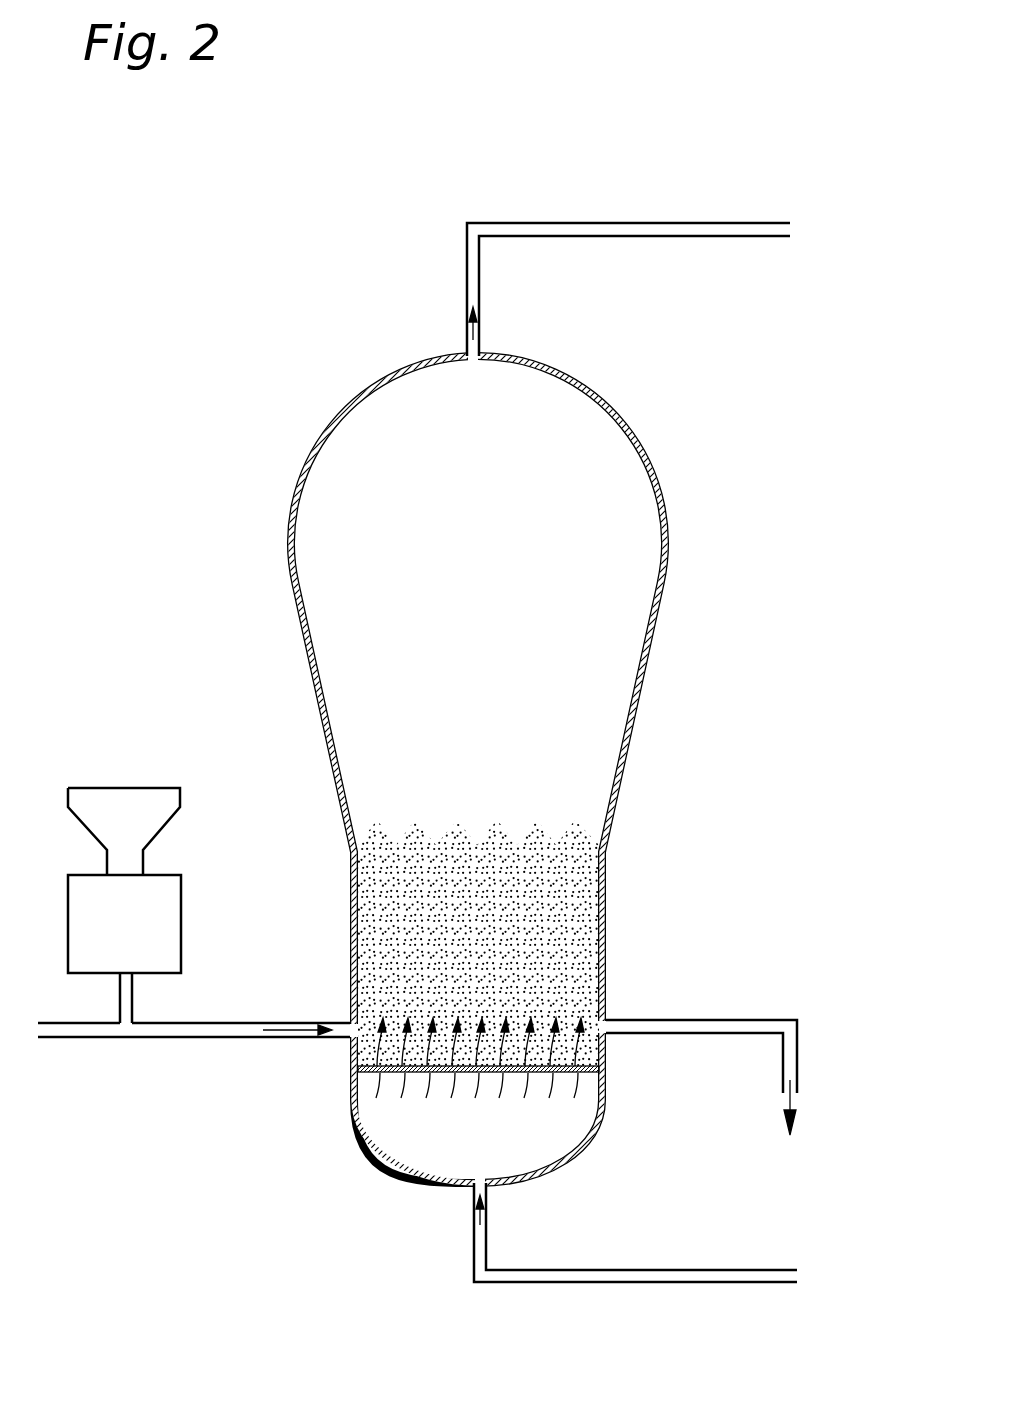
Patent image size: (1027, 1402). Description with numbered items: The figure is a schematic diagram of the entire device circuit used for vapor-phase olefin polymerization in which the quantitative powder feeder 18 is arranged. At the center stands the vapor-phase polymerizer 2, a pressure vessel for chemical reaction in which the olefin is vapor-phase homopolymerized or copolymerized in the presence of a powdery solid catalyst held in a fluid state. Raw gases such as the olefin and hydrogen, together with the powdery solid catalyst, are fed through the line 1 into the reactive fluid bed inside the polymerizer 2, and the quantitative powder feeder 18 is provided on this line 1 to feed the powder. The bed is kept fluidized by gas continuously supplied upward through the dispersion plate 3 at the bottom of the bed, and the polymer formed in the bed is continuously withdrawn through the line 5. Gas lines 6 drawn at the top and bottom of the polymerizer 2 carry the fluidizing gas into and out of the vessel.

The line 1 is at (82, 1035).
The vapor-phase polymerizer 2 is at (322, 428).
The dispersion plate 3 is at (403, 1073).
The line 5 is at (710, 1018).
The gas recycle line 6 is at (614, 222).
The quantitative powder feeder 18 is at (182, 923).